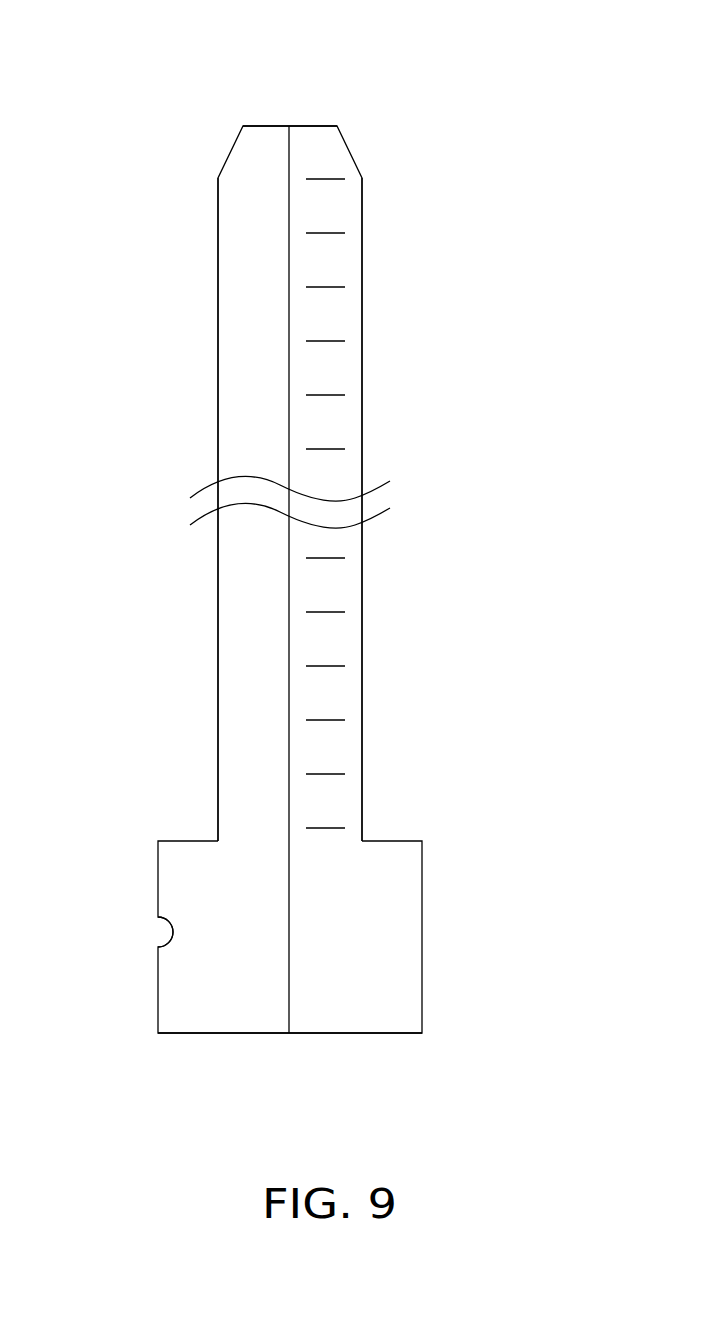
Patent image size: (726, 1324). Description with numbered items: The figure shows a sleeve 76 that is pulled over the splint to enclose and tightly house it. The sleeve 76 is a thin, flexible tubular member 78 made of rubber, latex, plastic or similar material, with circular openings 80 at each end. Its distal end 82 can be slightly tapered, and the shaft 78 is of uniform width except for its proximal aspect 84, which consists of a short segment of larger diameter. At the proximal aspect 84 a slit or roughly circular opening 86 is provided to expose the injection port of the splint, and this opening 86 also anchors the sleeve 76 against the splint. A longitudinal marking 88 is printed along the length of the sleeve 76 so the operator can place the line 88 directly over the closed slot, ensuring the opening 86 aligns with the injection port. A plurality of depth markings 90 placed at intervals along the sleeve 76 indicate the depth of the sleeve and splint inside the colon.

The sleeve 76 is at (415, 200).
The tubular member 78 is at (362, 325).
The circular openings 80 is at (291, 95).
The distal end 82 is at (185, 245).
The proximal aspect 84 is at (455, 905).
The opening 86 is at (135, 932).
The longitudinal marking 88 is at (289, 349).
The depth markings 90 is at (350, 648).